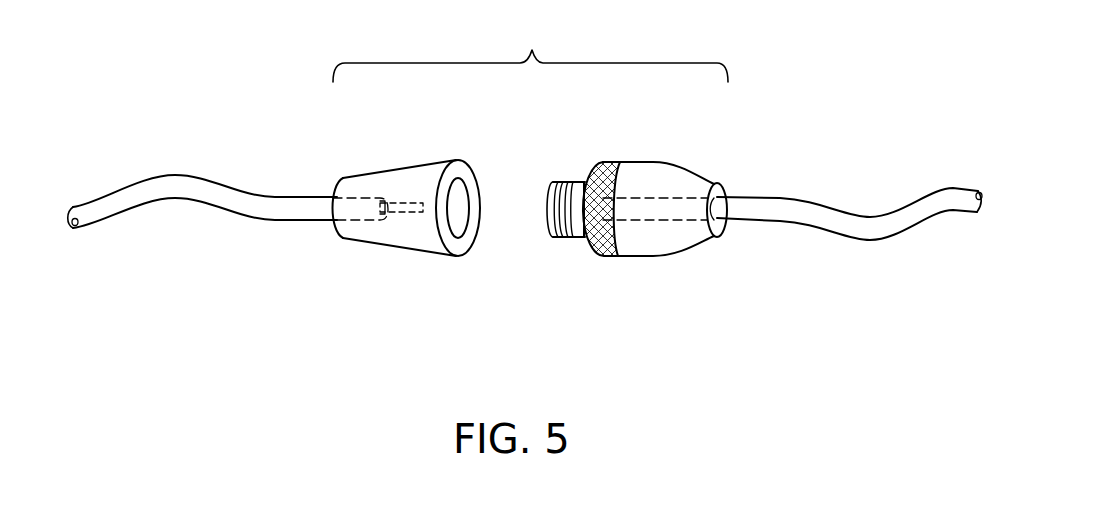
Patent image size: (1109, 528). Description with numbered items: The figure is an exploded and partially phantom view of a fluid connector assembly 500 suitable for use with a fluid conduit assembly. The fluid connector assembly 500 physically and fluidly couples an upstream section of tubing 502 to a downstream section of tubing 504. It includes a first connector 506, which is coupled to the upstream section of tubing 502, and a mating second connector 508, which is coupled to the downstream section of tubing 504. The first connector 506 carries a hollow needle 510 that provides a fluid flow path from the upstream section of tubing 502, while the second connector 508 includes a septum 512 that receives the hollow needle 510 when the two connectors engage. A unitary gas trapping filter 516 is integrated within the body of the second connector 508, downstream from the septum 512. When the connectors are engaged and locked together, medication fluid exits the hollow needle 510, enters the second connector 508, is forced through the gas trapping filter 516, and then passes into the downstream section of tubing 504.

The fluid connector assembly 500 is at (530, 50).
The upstream section of tubing 502 is at (177, 175).
The downstream section of tubing 504 is at (805, 197).
The first connector 506 is at (430, 258).
The second connector 508 is at (693, 242).
The hollow needle 510 is at (402, 200).
The septum 512 is at (563, 238).
The gas trapping filter 516 is at (608, 257).